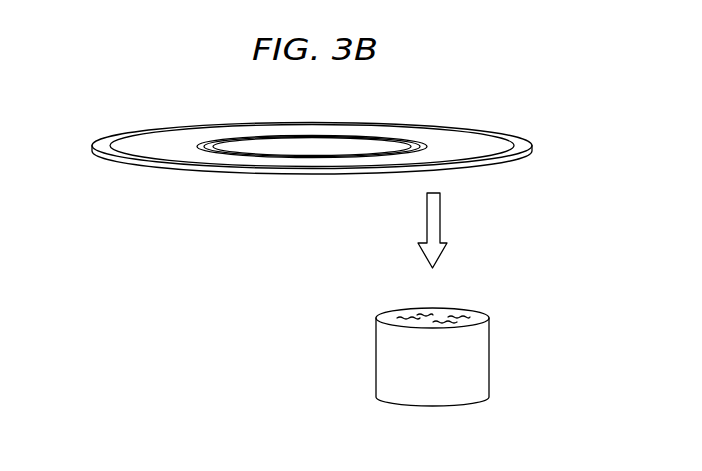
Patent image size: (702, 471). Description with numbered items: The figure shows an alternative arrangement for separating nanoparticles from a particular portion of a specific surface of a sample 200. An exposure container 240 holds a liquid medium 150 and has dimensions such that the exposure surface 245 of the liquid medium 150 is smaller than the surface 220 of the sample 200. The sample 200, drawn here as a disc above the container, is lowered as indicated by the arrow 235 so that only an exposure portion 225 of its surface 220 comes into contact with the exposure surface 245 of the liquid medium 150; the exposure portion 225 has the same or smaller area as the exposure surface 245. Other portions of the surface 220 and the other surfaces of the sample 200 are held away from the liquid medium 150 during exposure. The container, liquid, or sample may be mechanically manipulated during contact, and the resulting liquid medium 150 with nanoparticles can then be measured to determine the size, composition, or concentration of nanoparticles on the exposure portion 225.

The sample 200 is at (478, 132).
The surface 220 is at (168, 176).
The exposure portion 225 is at (466, 175).
The arrow 235 is at (440, 223).
The exposure container 240 is at (376, 345).
The exposure surface 245 is at (401, 308).
The liquid medium 150 is at (443, 314).